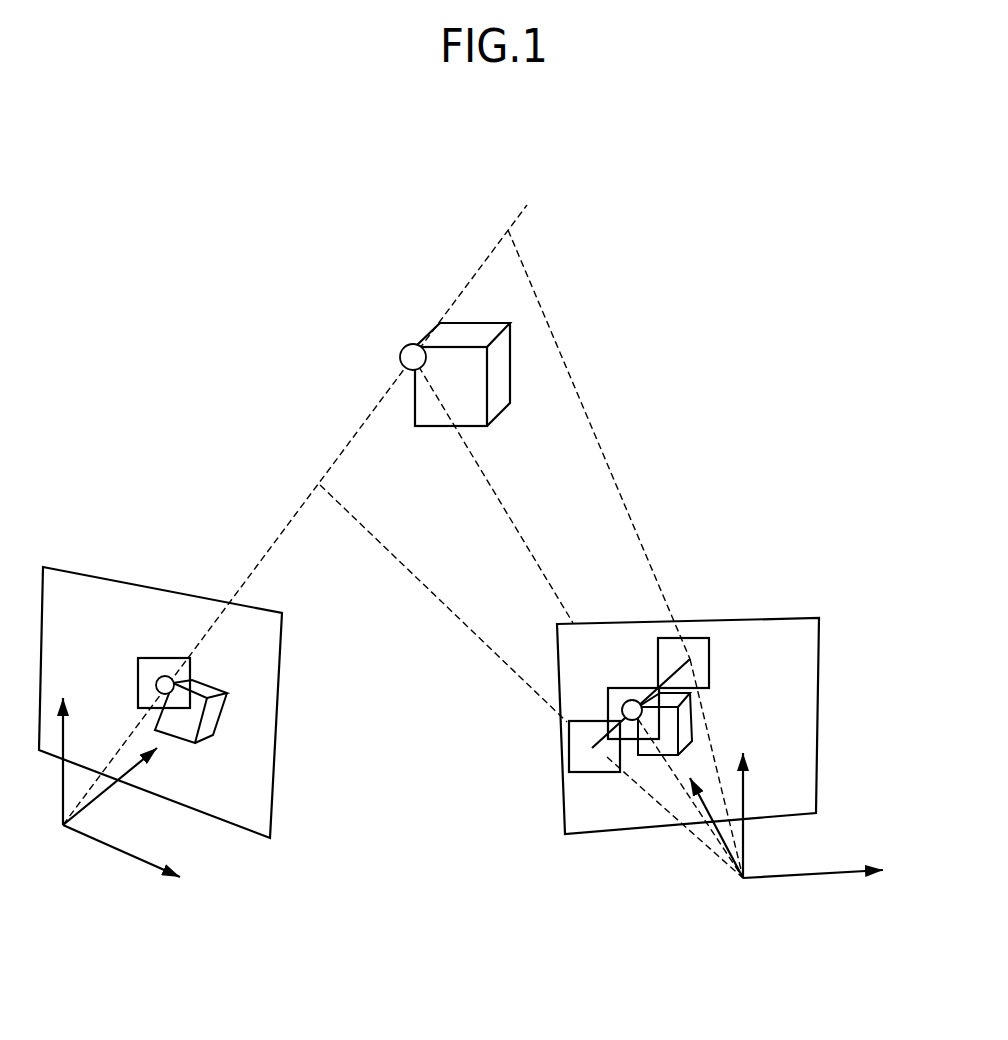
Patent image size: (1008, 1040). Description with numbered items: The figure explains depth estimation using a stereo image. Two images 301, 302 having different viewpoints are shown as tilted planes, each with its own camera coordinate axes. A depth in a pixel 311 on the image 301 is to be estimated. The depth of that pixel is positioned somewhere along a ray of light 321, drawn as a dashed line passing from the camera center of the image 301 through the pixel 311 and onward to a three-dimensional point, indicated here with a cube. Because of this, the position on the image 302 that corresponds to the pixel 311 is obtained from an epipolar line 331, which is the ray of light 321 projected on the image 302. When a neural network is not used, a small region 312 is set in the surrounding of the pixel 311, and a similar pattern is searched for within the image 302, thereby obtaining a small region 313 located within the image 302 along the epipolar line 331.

The image 301 is at (72, 572).
The image 302 is at (771, 619).
The pixel 311 is at (156, 686).
The small region 312 is at (163, 657).
The small region 313 is at (660, 726).
The ray of light 321 is at (527, 205).
The epipolar line 331 is at (675, 658).